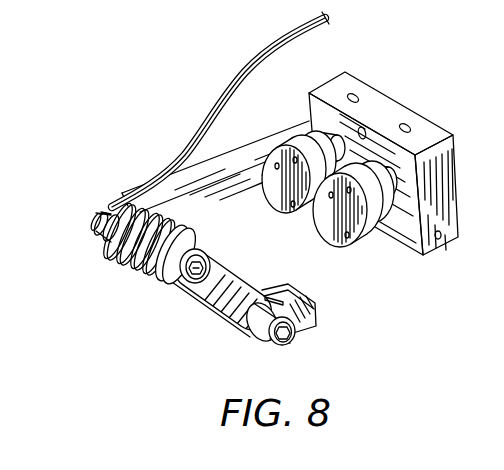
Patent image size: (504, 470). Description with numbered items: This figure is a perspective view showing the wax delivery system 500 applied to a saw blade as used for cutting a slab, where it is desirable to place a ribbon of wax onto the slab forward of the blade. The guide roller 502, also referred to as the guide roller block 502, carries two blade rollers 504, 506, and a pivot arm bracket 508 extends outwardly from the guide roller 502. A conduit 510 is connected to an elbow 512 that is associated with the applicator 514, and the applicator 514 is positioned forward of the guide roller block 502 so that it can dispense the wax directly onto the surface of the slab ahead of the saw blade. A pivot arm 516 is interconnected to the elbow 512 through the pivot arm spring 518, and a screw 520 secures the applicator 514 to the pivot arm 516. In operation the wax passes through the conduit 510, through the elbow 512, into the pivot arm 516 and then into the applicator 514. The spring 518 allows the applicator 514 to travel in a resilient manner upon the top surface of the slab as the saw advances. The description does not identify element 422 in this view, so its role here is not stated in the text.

The frame 422 is at (0, 50).
The wax delivery system 500 is at (333, 54).
The guide roller 502 is at (385, 104).
The blade roller 504 is at (300, 210).
The blade roller 506 is at (340, 243).
The pivot arm bracket 508 is at (215, 172).
The conduit 510 is at (267, 47).
The elbow 512 is at (92, 214).
The applicator 514 is at (313, 321).
The pivot arm 516 is at (196, 292).
The pivot arm spring 518 is at (128, 268).
The screw 520 is at (262, 338).